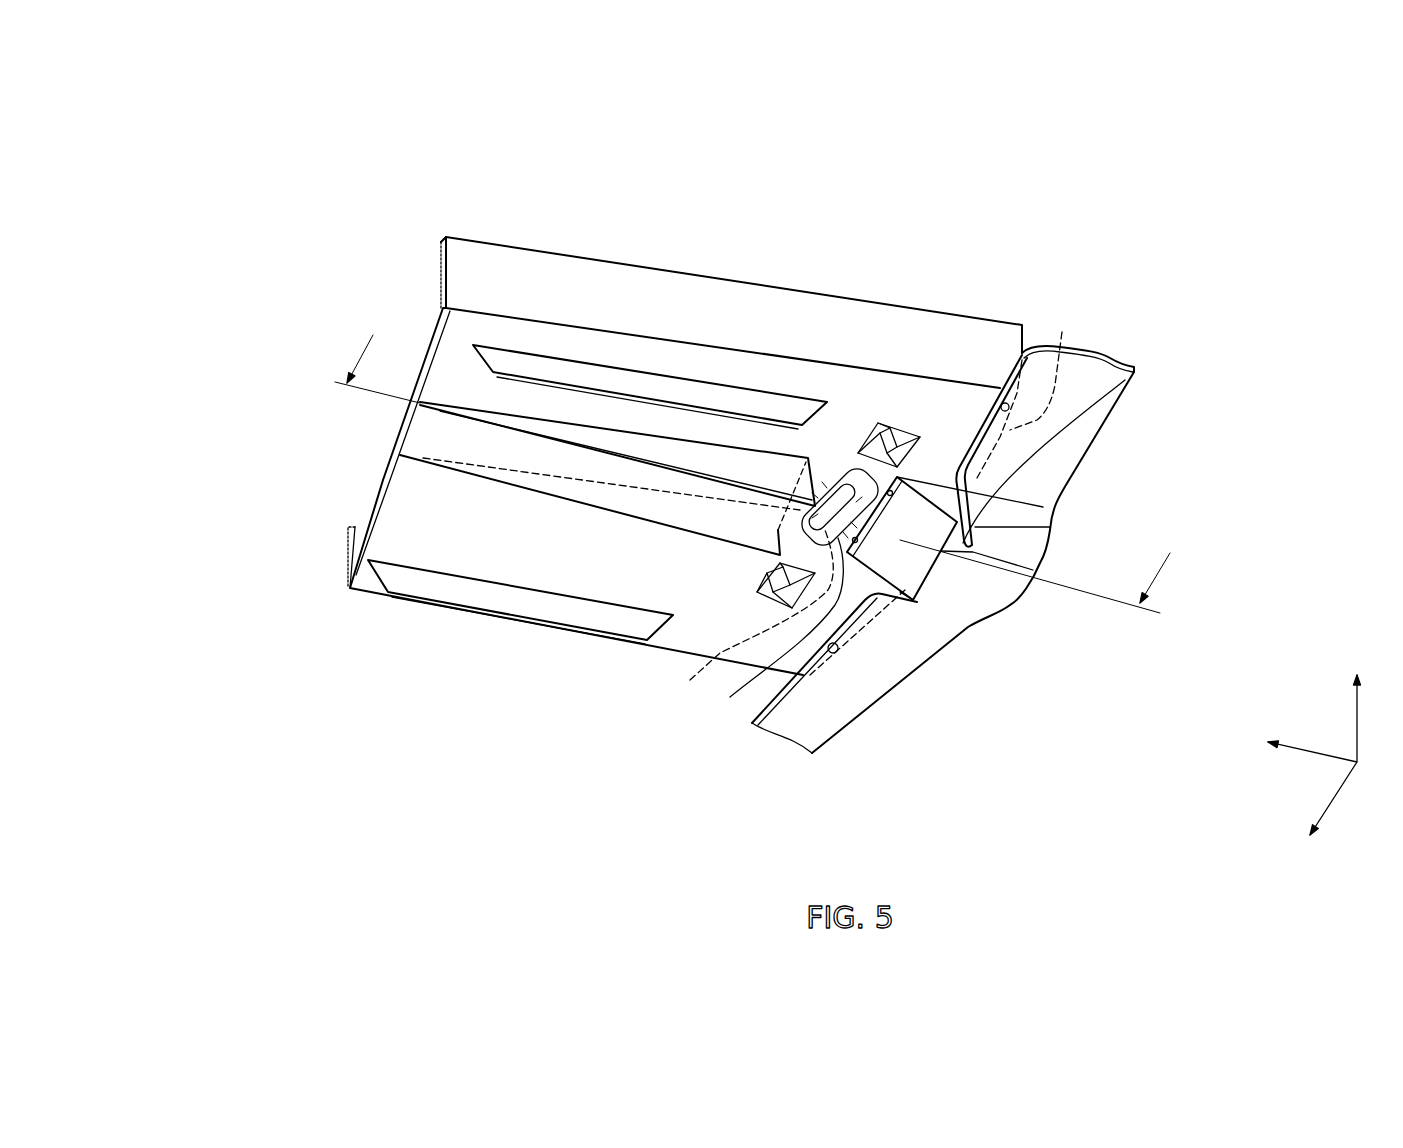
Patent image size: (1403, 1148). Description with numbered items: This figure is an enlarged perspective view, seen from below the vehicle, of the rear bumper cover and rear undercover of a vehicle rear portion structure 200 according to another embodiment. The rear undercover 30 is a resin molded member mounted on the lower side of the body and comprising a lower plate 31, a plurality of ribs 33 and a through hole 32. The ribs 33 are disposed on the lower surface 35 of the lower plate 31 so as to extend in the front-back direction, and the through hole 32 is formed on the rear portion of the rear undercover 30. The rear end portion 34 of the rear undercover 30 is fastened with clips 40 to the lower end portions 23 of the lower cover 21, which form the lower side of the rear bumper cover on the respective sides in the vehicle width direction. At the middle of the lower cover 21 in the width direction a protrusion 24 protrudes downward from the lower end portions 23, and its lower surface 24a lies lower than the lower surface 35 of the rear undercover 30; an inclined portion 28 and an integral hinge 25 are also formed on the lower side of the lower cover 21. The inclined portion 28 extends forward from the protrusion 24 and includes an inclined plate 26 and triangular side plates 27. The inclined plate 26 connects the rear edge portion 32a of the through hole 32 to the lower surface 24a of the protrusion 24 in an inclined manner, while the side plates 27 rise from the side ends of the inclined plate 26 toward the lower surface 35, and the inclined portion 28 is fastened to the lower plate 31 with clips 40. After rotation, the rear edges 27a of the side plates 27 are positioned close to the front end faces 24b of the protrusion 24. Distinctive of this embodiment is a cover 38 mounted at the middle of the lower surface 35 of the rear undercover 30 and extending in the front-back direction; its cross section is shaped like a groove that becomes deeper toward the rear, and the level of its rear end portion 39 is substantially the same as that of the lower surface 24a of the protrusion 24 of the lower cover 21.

The vehicle rear portion structure 200 is at (782, 473).
The rear undercover 30 is at (606, 492).
The lower plate 31 is at (402, 478).
The through hole 32 is at (780, 553).
The rear edge portion 32a is at (690, 680).
The ribs 33 is at (538, 362).
The lower surface 35 is at (870, 483).
The cover 38 is at (752, 477).
The rear end portion 39 is at (852, 482).
The clips 40 is at (853, 545).
The lower cover 21 is at (1014, 464).
The lower end portions 23 is at (1073, 445).
The protrusion 24 is at (1042, 592).
The lower surface 24a is at (782, 738).
The front end faces 24b is at (1050, 527).
The integral hinge 25 is at (1000, 598).
The inclined plate 26 is at (955, 490).
The side plates 27 is at (977, 518).
The rear edges 27a is at (1134, 367).
The inclined portion 28 is at (953, 187).
The rear end portion 34 is at (1062, 332).